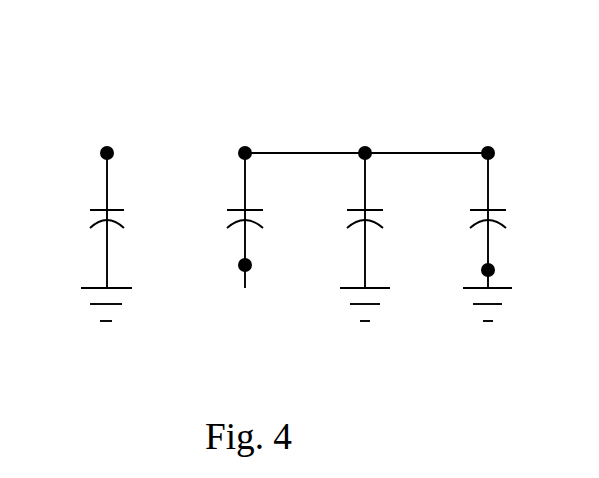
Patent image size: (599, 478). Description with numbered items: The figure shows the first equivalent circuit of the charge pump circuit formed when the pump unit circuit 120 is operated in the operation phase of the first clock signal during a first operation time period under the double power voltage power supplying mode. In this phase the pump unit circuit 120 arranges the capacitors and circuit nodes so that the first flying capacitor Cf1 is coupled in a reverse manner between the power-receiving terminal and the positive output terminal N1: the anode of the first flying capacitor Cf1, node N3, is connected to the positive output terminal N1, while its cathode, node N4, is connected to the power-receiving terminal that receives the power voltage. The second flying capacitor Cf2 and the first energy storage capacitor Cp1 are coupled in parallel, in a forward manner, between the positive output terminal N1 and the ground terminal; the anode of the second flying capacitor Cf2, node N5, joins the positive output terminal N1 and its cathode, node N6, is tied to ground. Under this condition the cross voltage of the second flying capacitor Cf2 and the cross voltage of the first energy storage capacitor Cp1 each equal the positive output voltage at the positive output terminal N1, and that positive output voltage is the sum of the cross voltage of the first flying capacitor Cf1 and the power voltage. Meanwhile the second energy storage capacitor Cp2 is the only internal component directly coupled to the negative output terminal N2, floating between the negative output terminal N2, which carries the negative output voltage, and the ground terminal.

The pump unit circuit 120 is at (530, 44).
The positive output terminal N1 is at (387, 139).
The negative output terminal N2 is at (135, 153).
The anode of the first flying capacitor N3 is at (246, 139).
The cathode of the first flying capacitor N4 is at (265, 266).
The anode of the second flying capacitor N5 is at (489, 139).
The cathode of the second flying capacitor N6 is at (509, 271).
The first energy storage capacitor Cp1 is at (389, 222).
The second energy storage capacitor Cp2 is at (80, 222).
The first flying capacitor Cf1 is at (223, 222).
The second flying capacitor Cf2 is at (513, 222).